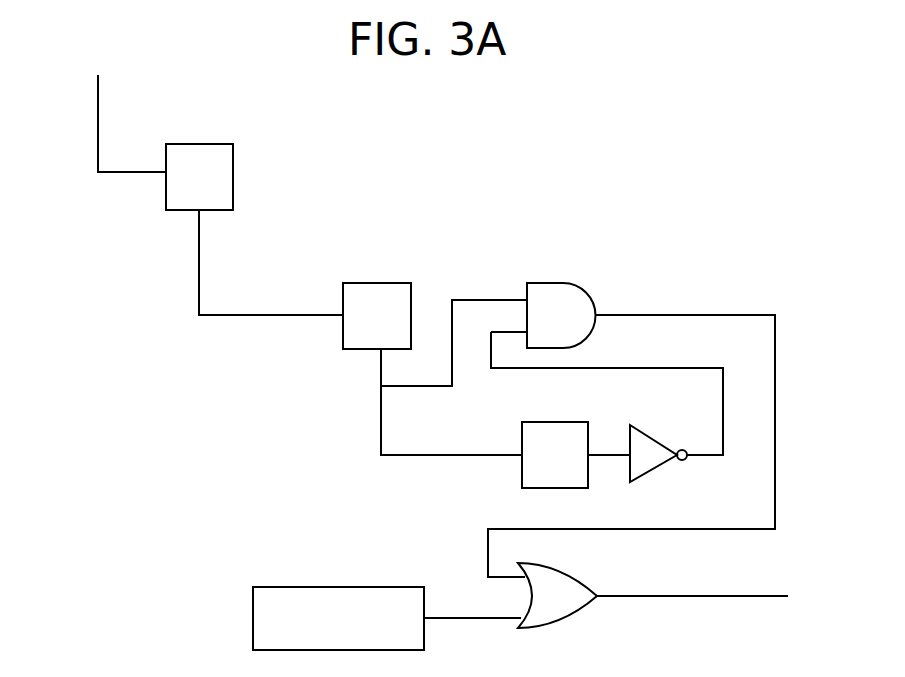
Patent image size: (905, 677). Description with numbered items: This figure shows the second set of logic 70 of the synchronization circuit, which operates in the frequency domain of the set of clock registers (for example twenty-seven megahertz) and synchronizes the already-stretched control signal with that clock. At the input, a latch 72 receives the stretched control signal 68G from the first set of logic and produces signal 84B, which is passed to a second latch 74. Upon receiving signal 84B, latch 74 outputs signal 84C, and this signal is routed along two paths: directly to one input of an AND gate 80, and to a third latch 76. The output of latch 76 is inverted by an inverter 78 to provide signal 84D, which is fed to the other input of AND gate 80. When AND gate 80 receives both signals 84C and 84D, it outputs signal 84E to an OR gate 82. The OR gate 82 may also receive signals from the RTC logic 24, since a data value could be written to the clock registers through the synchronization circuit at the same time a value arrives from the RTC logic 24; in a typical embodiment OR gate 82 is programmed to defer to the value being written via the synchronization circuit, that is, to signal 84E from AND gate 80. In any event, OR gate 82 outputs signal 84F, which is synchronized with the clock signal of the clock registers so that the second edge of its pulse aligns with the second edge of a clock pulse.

The stretched control signal 68G is at (98, 98).
The latch 72 is at (207, 144).
The signal 84B is at (199, 240).
The latch 74 is at (381, 283).
The signal 84C is at (381, 368).
The AND gate 80 is at (563, 283).
The signal 84E is at (658, 315).
The second set of logic 70 is at (262, 415).
The latch 76 is at (560, 422).
The inverter 78 is at (660, 437).
The signal 84D is at (707, 455).
The RTC logic 24 is at (307, 587).
The OR gate 82 is at (564, 568).
The signal 84F is at (776, 596).